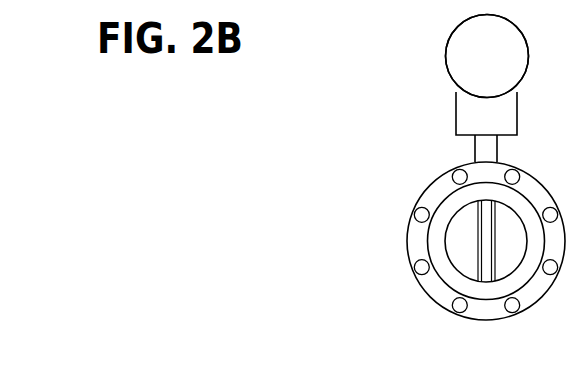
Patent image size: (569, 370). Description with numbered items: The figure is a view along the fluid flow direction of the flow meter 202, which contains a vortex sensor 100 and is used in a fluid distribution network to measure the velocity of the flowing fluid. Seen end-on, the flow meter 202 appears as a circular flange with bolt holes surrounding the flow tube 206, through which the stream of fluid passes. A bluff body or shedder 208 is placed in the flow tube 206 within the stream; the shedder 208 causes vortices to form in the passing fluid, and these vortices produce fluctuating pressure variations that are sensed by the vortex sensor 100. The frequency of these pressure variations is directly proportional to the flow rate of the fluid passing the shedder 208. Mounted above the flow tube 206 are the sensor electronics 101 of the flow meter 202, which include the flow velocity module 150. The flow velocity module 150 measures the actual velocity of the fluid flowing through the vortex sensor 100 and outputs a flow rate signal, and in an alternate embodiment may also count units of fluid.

The vortex sensor 100 is at (460, 153).
The sensor electronics 101 is at (443, 57).
The flow velocity module 150 is at (499, 78).
The flow meter 202 is at (262, 245).
The flow tube 206 is at (448, 240).
The shedder 208 is at (475, 260).